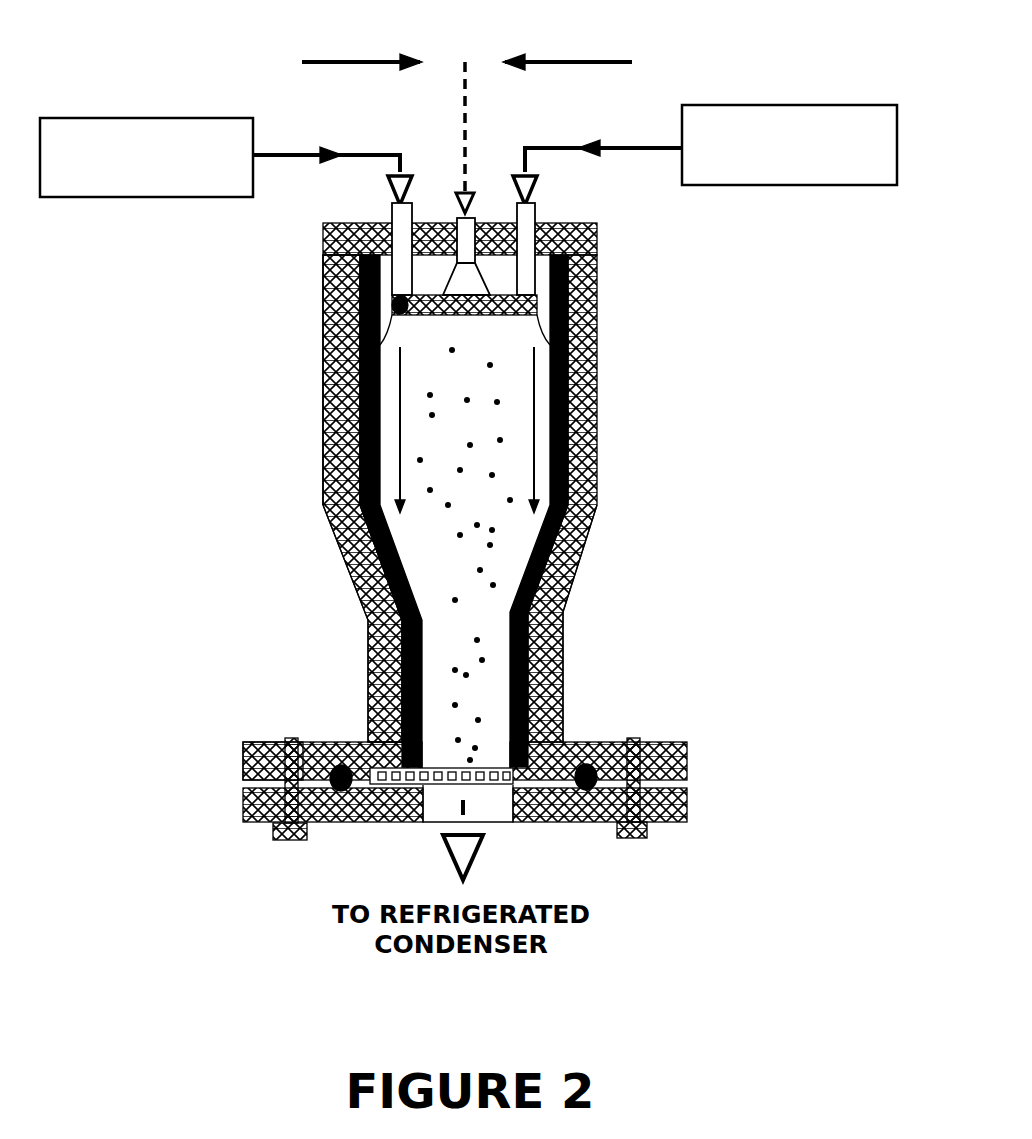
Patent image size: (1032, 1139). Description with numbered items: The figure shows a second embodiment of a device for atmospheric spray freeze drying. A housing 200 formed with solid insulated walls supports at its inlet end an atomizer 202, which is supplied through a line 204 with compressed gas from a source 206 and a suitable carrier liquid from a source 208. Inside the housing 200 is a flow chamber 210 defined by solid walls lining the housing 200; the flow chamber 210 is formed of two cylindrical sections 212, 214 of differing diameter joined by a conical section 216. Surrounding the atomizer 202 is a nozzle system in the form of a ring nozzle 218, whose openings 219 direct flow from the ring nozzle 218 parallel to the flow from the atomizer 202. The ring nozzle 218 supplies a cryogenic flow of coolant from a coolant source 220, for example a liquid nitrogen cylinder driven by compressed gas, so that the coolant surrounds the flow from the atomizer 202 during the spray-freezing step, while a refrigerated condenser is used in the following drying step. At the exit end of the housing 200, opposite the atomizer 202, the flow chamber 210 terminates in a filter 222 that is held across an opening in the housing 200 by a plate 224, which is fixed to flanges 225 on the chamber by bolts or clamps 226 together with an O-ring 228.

The housing 200 is at (597, 455).
The atomizer 202 is at (470, 278).
The line 204 is at (470, 125).
The source 206 is at (350, 62).
The source 208 is at (558, 62).
The flow chamber 210 is at (597, 396).
The cylindrical section 212 is at (590, 340).
The cylindrical section 214 is at (560, 653).
The conical section 216 is at (578, 567).
The ring nozzle 218 is at (545, 330).
The openings 219 is at (323, 342).
The coolant source 220 is at (115, 197).
The filter 222 is at (423, 822).
The plate 224 is at (572, 822).
The flanges 225 is at (652, 740).
The bolts or clamps 226 is at (640, 838).
The O-ring 228 is at (243, 757).